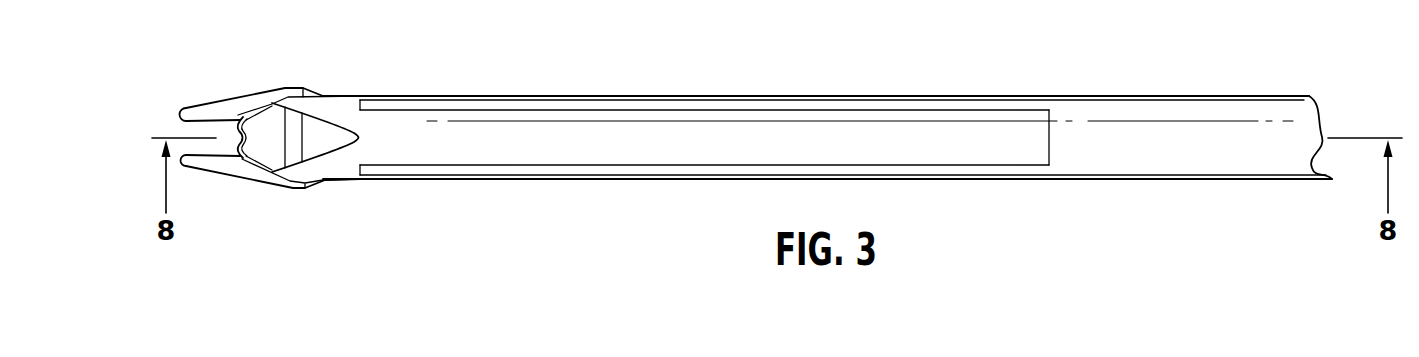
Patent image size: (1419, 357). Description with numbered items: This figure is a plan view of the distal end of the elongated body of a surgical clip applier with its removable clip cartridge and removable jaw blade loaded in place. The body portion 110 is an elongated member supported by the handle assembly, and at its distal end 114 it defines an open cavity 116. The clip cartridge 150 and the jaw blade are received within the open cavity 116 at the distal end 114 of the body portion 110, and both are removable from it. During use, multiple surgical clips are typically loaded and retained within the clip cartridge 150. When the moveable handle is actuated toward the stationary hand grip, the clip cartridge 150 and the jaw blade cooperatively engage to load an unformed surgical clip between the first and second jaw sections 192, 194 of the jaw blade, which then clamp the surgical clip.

The body portion 110 is at (1153, 110).
The distal end 114 is at (342, 93).
The open cavity 116 is at (1033, 142).
The clip cartridge 150 is at (742, 140).
The first jaw section 192 is at (226, 110).
The second jaw section 194 is at (220, 163).